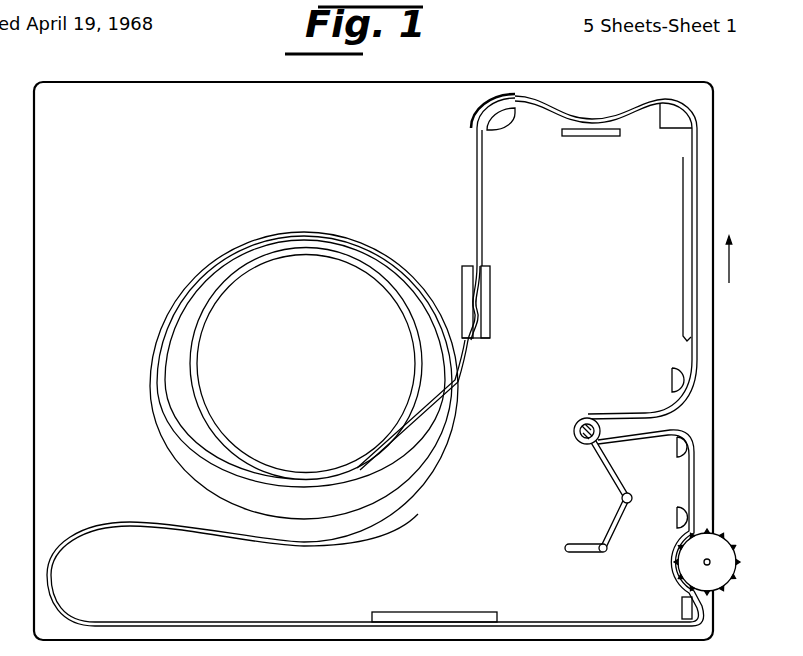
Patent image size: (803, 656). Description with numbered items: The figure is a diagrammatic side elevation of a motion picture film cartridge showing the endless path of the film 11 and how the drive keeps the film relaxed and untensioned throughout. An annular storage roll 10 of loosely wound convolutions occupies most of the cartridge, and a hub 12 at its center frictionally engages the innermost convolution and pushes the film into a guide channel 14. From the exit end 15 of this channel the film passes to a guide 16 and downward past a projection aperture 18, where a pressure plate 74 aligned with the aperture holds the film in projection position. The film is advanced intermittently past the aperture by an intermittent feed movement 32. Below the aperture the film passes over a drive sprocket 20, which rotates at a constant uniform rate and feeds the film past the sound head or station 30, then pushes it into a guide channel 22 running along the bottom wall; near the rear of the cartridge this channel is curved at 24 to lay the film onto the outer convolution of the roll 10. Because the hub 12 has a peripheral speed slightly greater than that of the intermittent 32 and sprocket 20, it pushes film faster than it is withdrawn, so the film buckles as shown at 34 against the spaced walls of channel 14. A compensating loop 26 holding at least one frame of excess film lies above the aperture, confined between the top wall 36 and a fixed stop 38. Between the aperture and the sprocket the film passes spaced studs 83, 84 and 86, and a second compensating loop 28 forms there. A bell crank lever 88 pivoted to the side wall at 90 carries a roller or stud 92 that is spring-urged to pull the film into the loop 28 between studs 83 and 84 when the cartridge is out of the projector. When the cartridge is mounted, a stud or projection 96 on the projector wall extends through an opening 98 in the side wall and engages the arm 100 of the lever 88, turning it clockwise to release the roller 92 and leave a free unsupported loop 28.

The annular storage roll 10 is at (150, 335).
The film 11 is at (484, 186).
The hub 12 is at (364, 462).
The guide channel 14 is at (497, 280).
The exit end of the guide channel 15 is at (502, 126).
The guide 16 is at (680, 128).
The projection aperture 18 is at (722, 224).
The drive sprocket 20 is at (726, 547).
The guide channel 22 is at (455, 606).
The curved portion of guide channel 24 is at (62, 575).
The compensating loop 26 is at (599, 116).
The second compensating loop 28 is at (644, 413).
The sound head or station 30 is at (723, 451).
The intermittent feed movement 32 is at (731, 258).
The film buckle 34 is at (486, 337).
The top wall 36 is at (518, 82).
The fixed stop 38 is at (591, 149).
The pressure plate 74 is at (683, 297).
The stud or guide 83 is at (672, 385).
The stud or guide 84 is at (675, 449).
The stud or guide 86 is at (675, 515).
The bell crank lever 88 is at (604, 472).
The pivot 90 is at (633, 496).
The roller or stud 92 is at (577, 428).
The stud or projection 96 is at (607, 552).
The opening 98 is at (568, 552).
The arm of the bell crank lever 100 is at (611, 521).